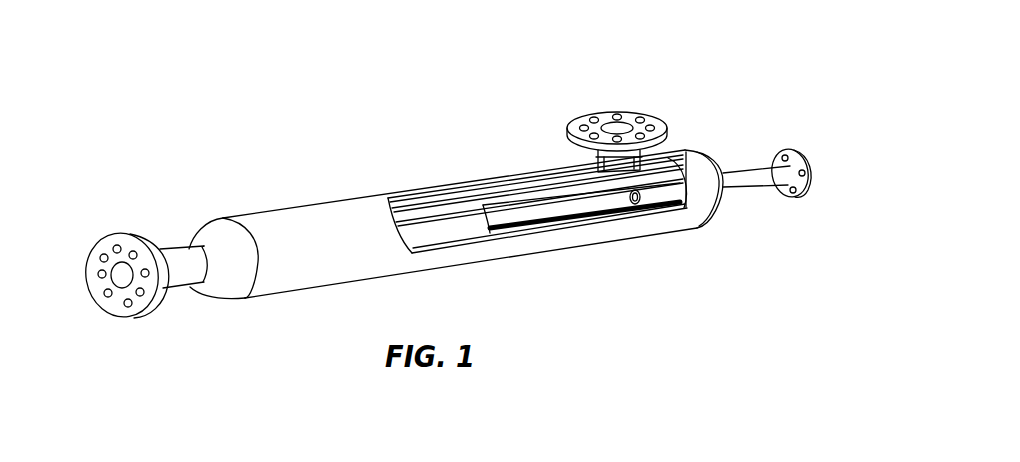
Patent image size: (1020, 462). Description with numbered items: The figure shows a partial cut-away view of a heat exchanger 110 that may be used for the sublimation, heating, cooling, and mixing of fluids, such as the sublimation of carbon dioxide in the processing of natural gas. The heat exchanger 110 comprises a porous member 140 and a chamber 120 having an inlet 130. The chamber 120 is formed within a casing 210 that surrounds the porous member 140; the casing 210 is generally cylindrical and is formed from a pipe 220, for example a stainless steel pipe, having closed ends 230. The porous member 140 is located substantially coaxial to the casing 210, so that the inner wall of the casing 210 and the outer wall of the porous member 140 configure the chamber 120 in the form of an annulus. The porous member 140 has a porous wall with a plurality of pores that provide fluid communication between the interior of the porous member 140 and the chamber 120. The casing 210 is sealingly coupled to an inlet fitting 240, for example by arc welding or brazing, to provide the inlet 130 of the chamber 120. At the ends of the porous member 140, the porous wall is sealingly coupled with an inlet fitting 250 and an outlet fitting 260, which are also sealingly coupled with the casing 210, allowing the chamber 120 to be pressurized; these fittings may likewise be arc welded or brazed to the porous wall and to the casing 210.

The heat exchanger 110 is at (240, 132).
The chamber 120 is at (494, 195).
The inlet 130 is at (617, 127).
The porous member 140 is at (422, 218).
The casing 210 is at (338, 198).
The pipe 220 is at (350, 268).
The closed ends 230 is at (228, 263).
The inlet fitting 240 is at (587, 108).
The inlet fitting 250 is at (772, 193).
The outlet fitting 260 is at (112, 230).